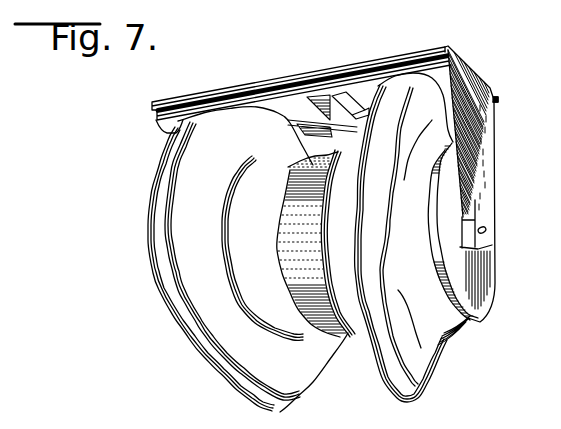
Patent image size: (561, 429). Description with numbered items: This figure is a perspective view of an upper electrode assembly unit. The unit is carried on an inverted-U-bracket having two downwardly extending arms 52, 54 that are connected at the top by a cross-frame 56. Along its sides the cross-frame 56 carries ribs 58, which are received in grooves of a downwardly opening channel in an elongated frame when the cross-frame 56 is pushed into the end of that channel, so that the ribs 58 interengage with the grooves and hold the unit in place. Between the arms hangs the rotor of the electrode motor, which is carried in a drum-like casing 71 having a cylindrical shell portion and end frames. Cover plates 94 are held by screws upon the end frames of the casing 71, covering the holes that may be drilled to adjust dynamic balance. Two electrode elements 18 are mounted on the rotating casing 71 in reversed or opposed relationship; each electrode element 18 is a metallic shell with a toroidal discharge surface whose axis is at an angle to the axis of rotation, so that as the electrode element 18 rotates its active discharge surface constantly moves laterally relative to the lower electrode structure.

The electrode element 18 is at (158, 255).
The downwardly extending arm 52 is at (172, 134).
The downwardly extending arm 54 is at (485, 156).
The cross-frame 56 is at (293, 79).
The rib 58 is at (377, 66).
The drum-like casing 71 is at (322, 318).
The cover plate 94 is at (487, 273).